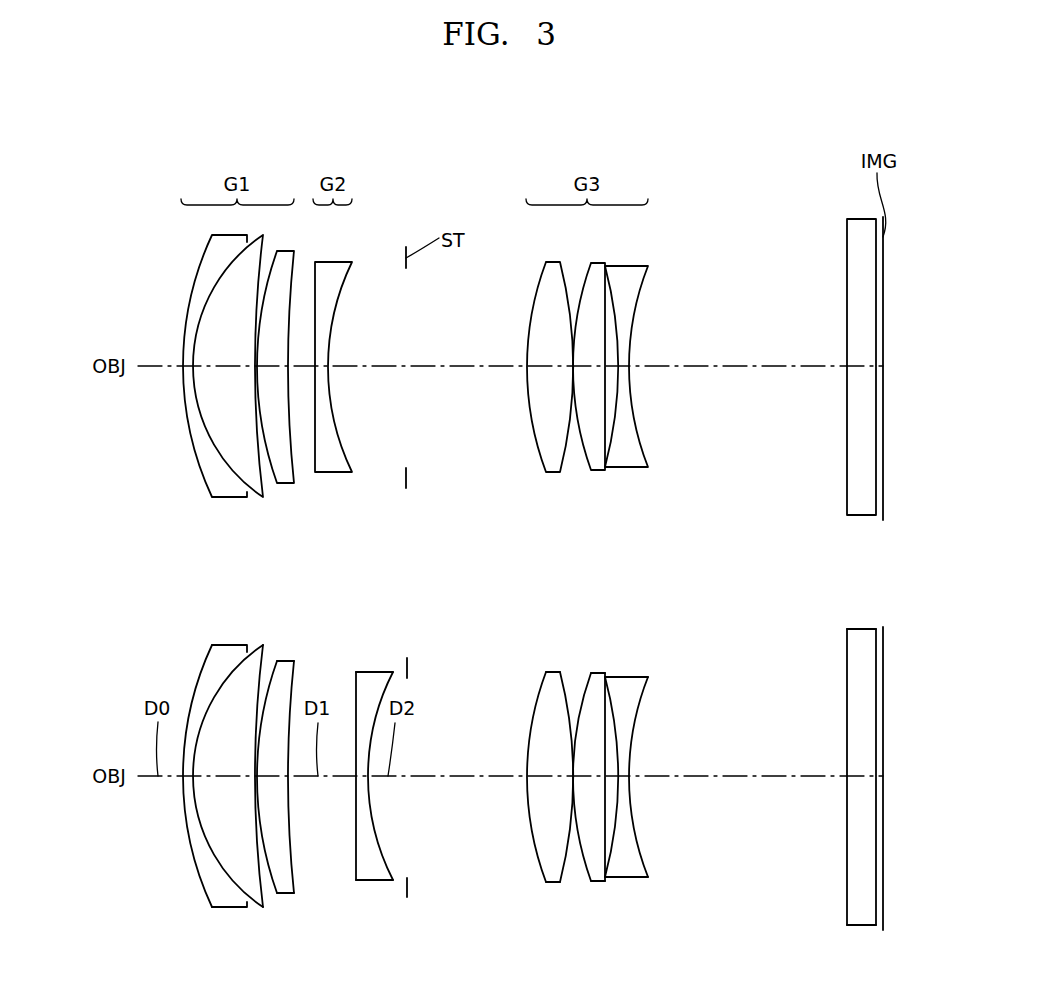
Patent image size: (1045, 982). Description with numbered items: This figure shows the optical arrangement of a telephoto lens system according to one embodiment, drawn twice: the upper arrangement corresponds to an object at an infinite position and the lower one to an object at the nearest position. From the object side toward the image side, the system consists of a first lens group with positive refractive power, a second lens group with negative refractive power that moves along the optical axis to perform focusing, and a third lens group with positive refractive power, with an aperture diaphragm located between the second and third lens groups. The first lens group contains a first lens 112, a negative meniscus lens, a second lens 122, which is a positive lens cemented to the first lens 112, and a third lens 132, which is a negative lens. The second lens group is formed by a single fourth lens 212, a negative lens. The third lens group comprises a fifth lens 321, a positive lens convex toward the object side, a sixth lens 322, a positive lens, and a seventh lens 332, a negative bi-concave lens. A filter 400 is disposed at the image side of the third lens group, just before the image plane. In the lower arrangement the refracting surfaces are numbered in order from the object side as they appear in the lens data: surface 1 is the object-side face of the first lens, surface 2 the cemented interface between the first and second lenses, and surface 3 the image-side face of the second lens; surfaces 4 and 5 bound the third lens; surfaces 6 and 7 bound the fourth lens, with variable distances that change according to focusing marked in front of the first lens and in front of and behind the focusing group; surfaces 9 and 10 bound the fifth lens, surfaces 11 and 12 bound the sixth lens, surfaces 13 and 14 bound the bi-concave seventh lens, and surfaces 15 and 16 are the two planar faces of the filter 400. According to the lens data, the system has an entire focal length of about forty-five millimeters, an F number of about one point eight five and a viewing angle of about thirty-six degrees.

The first lens 112 is at (228, 497).
The second lens 122 is at (256, 497).
The third lens 132 is at (283, 483).
The fourth lens 212 is at (332, 472).
The fifth lens 321 is at (552, 472).
The sixth lens 322 is at (597, 470).
The seventh lens 332 is at (628, 467).
The filter 400 is at (847, 240).
The surface 1 is at (187, 833).
The surface 2 is at (213, 855).
The surface 3 is at (253, 872).
The surface 4 is at (262, 838).
The surface 5 is at (290, 863).
The surface 6 is at (360, 825).
The surface 7 is at (383, 857).
The surface 9 is at (528, 813).
The surface 10 is at (562, 846).
The surface 11 is at (585, 857).
The surface 12 is at (607, 810).
The surface 13 is at (615, 840).
The surface 14 is at (643, 862).
The surface 15 is at (845, 850).
The surface 16 is at (873, 888).